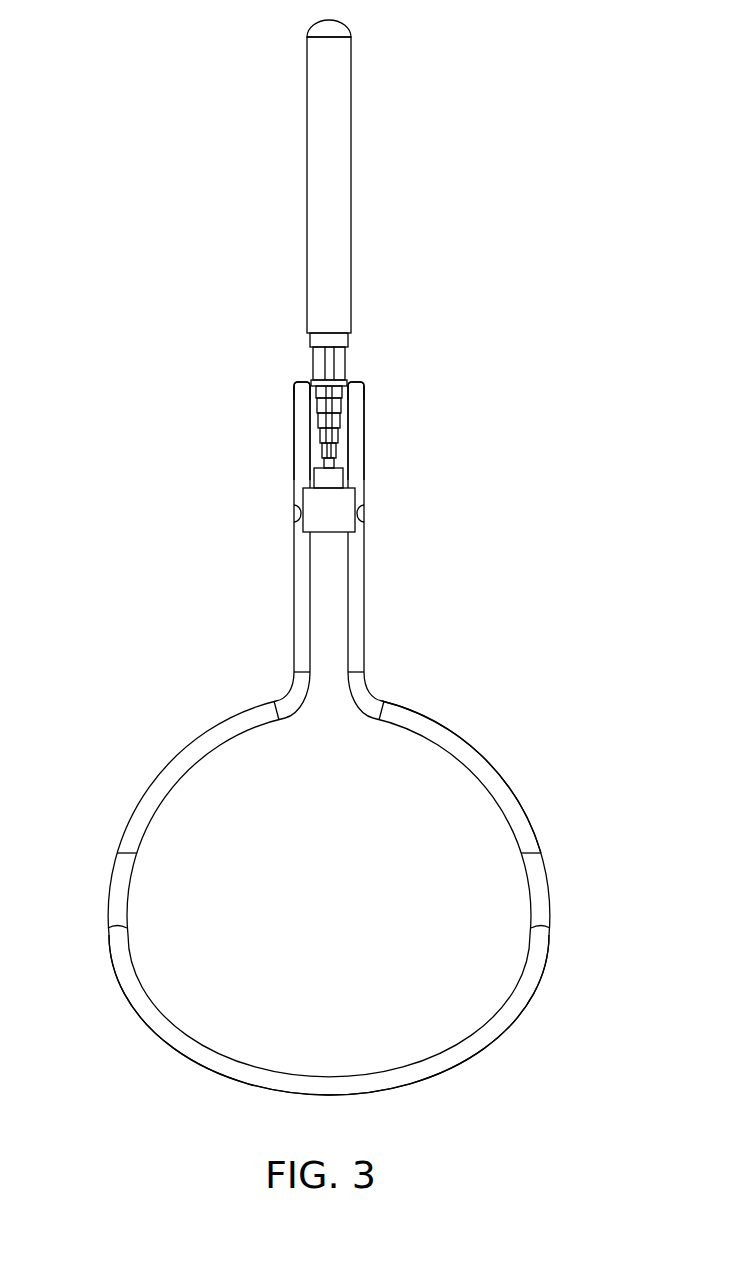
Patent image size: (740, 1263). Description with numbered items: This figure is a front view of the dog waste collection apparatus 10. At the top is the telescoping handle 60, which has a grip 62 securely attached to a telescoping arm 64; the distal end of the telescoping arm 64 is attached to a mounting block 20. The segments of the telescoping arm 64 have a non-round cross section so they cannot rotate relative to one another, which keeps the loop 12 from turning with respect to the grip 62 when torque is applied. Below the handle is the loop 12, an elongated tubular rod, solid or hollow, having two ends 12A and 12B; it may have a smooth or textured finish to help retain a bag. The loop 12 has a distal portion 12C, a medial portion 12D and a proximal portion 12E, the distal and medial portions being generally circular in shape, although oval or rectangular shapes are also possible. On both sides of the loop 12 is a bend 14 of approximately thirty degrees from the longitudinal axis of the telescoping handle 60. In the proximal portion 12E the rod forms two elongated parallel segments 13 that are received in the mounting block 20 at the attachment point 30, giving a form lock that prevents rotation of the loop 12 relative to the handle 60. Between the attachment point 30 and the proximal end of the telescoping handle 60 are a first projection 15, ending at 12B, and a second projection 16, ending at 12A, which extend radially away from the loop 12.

The dog waste collection apparatus 10 is at (575, 412).
The loop 12 is at (535, 812).
The end of loop 12A is at (293, 383).
The end of loop 12B is at (363, 383).
The distal portion 12C is at (505, 1030).
The medial portion 12D is at (492, 754).
The proximal portion 12E is at (370, 522).
The elongated parallel segments 13 is at (294, 569).
The bend 14 is at (108, 890).
The first projection 15 is at (365, 447).
The second projection 16 is at (294, 430).
The mounting block 20 is at (356, 498).
The attachment point 30 is at (410, 505).
The telescoping handle 60 is at (358, 287).
The grip 62 is at (352, 128).
The telescoping arm 64 is at (346, 366).